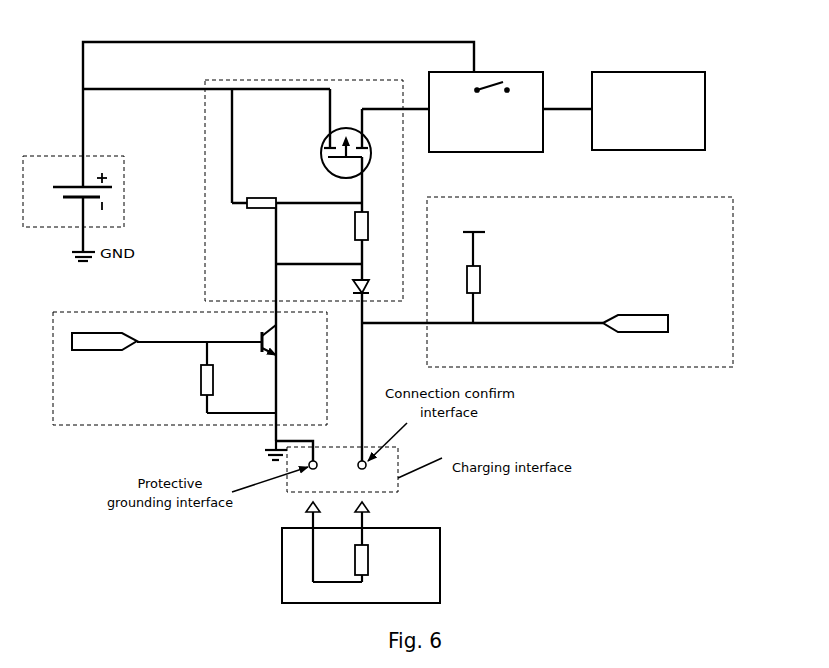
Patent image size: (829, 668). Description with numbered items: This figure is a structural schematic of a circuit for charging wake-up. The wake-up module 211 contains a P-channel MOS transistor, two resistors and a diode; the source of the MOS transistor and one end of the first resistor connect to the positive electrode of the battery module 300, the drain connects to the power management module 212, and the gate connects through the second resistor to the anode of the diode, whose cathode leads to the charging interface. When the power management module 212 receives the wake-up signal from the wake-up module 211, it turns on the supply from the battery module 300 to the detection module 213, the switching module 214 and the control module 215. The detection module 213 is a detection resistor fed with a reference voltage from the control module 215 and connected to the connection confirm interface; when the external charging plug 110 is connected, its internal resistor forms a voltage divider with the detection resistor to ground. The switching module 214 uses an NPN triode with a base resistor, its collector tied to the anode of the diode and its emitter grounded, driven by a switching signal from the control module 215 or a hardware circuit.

The wake-up module 211 is at (204, 88).
The power management module 212 is at (498, 68).
The detection module 213 is at (735, 248).
The switching module 214 is at (98, 310).
The control module 215 is at (673, 68).
The battery module 300 is at (98, 156).
The external charging plug 110 is at (440, 575).